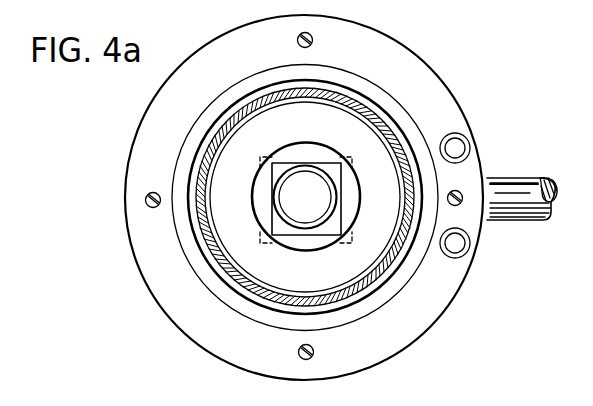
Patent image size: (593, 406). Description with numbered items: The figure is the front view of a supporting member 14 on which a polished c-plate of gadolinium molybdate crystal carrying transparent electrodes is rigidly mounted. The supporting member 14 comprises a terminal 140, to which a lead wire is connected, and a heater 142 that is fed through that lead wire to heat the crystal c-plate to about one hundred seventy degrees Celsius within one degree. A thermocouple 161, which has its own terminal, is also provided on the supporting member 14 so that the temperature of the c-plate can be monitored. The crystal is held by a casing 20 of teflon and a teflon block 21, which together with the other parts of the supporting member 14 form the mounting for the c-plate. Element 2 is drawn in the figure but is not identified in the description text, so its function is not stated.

The photodetector cell 2 is at (282, 171).
The supporting member 14 is at (447, 288).
The terminal 140 is at (468, 252).
The heater 142 is at (385, 263).
The thermocouple 161 is at (358, 197).
The casing 20 is at (285, 240).
The teflon block 21 is at (286, 196).